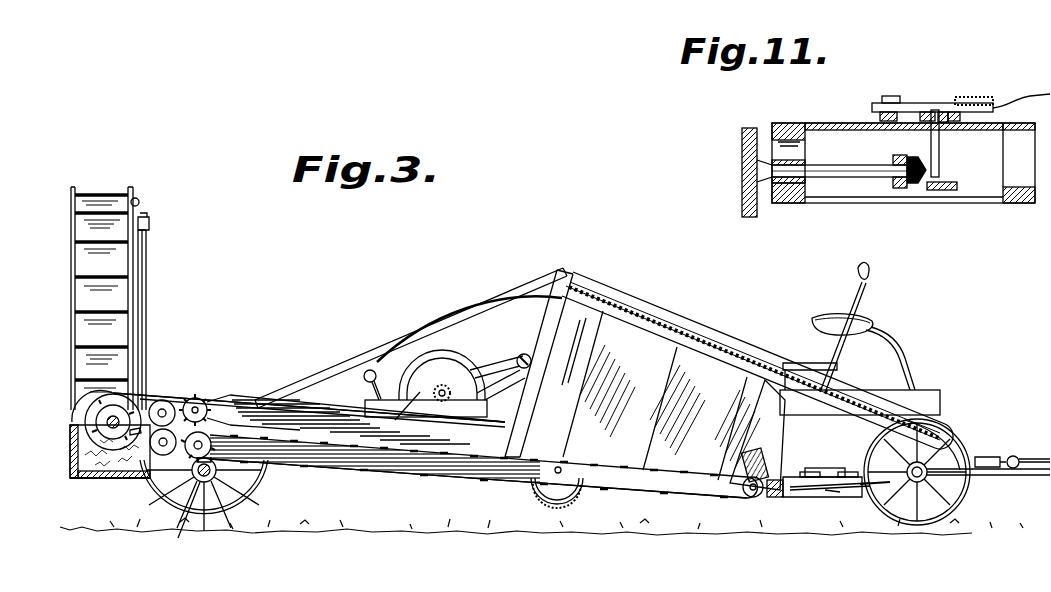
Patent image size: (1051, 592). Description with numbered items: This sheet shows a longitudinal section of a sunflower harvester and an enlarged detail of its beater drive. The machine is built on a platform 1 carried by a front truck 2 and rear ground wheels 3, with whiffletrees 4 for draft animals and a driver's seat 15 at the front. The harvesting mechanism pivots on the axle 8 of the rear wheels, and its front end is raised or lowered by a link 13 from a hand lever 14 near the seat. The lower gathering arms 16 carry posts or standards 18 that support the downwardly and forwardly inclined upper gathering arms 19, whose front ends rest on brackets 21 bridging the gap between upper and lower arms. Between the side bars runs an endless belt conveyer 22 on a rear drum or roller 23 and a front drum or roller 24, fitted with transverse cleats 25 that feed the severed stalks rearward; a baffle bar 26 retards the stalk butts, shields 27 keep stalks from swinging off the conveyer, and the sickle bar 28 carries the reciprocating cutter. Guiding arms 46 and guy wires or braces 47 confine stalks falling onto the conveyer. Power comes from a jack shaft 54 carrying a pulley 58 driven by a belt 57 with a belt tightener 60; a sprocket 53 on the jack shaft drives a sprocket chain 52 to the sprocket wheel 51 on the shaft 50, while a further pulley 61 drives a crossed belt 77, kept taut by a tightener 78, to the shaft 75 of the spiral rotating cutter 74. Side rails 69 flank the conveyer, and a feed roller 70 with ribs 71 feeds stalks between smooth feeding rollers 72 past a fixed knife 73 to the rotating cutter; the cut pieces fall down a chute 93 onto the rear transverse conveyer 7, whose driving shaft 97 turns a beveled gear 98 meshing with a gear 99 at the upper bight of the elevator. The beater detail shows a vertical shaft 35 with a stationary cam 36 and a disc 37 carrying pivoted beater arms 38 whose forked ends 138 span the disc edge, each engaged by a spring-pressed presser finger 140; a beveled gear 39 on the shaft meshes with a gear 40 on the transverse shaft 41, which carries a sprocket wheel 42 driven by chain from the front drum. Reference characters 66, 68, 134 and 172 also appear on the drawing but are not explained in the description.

In FIG. 3, the platform 1 is at (905, 392).
In FIG. 3, the front truck 2 is at (975, 475).
In FIG. 3, the rear ground wheels 3 is at (268, 490).
In FIG. 3, the whiffletrees 4 is at (1020, 458).
In FIG. 3, the rear transverse conveyer 7 is at (92, 298).
In FIG. 3, the axle 8 is at (184, 519).
In FIG. 3, the link 13 is at (803, 363).
In FIG. 3, the hand lever 14 is at (860, 300).
In FIG. 3, the driver's seat 15 is at (874, 330).
In FIG. 3, the lower gathering arms 16 is at (916, 521).
In FIG. 11, the lower gathering arms 16 is at (822, 116).
In FIG. 3, the posts or standards 18 is at (548, 323).
In FIG. 3, the upper gathering arms 19 is at (753, 363).
In FIG. 3, the brackets 21 is at (962, 445).
In FIG. 3, the endless belt conveyer 22 is at (412, 475).
In FIG. 3, the rear drum or roller 23 is at (206, 446).
In FIG. 3, the front drum or roller 24 is at (748, 495).
In FIG. 3, the transverse bars or cleats 25 is at (280, 437).
In FIG. 3, the bridge or baffle bar 26 is at (790, 470).
In FIG. 3, the shields 27 is at (728, 455).
In FIG. 3, the sickle bar 28 is at (782, 492).
In FIG. 11, the vertical shaft 35 is at (940, 155).
In FIG. 3, the stationary cam 36 is at (820, 490).
In FIG. 11, the stationary cam 36 is at (945, 112).
In FIG. 3, the disc 37 is at (860, 488).
In FIG. 11, the disc 37 is at (878, 103).
In FIG. 3, the beater arms 38 is at (808, 472).
In FIG. 11, the beater arms 38 is at (1010, 100).
In FIG. 3, the beveled gear 39 is at (833, 495).
In FIG. 11, the beveled gear 39 is at (950, 190).
In FIG. 11, the beveled gear 40 is at (916, 157).
In FIG. 11, the transverse shaft 41 is at (855, 178).
In FIG. 11, the sprocket wheel 42 is at (747, 217).
In FIG. 3, the guiding arms 46 is at (472, 310).
In FIG. 3, the guy wires or braces 47 is at (355, 348).
In FIG. 3, the shaft 50 is at (562, 471).
In FIG. 3, the sprocket wheel 51 is at (557, 498).
In FIG. 3, the sprocket chain 52 is at (495, 392).
In FIG. 3, the sprocket 53 is at (445, 385).
In FIG. 3, the jack shaft 54 is at (426, 408).
In FIG. 3, the belt 57 is at (485, 360).
In FIG. 3, the pulley 58 is at (436, 368).
In FIG. 3, the belt tightener 60 is at (518, 356).
In FIG. 3, the pulley 61 is at (405, 413).
In FIG. 3, the conveyor guide 66 is at (574, 351).
In FIG. 3, the chute side rail 68 is at (920, 397).
In FIG. 3, the side rails 69 is at (242, 400).
In FIG. 3, the feed roller 70 is at (195, 398).
In FIG. 3, the ribs 71 is at (212, 400).
In FIG. 3, the feeding and supporting rollers 72 is at (163, 456).
In FIG. 3, the fixed knife 73 is at (138, 436).
In FIG. 3, the rotating knife or cutter 74 is at (76, 478).
In FIG. 3, the shaft 75 is at (85, 422).
In FIG. 3, the crossed belt 77 is at (298, 395).
In FIG. 3, the tightener 78 is at (364, 376).
In FIG. 3, the chute 93 is at (108, 478).
In FIG. 3, the shaft 97 is at (148, 297).
In FIG. 3, the beveled gear 98 is at (149, 221).
In FIG. 3, the beveled gear 99 is at (139, 202).
In FIG. 3, the conveyor panels 134 is at (661, 395).
In FIG. 11, the forked end 138 is at (960, 121).
In FIG. 11, the presser finger 140 is at (975, 97).
In FIG. 3, the bracket 172 is at (830, 468).